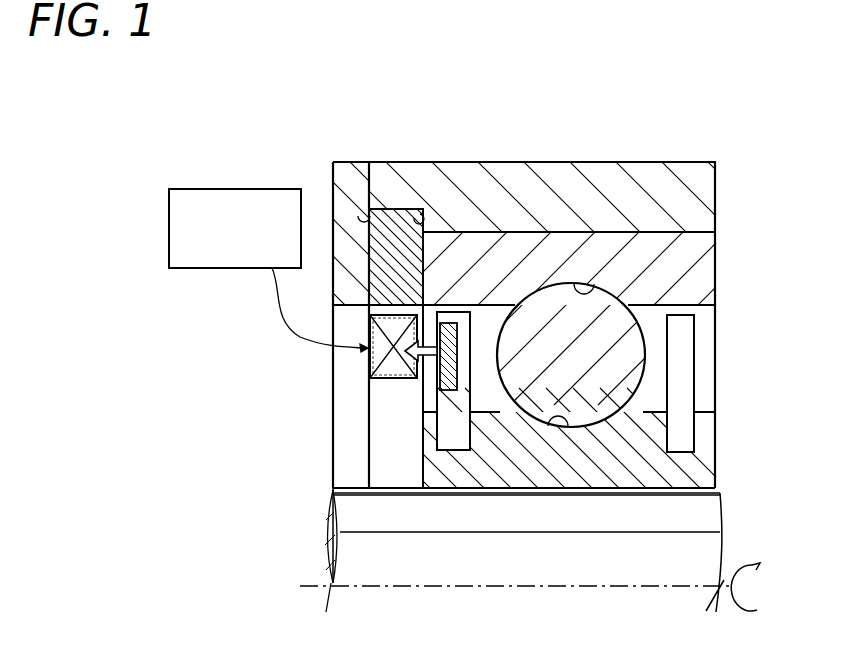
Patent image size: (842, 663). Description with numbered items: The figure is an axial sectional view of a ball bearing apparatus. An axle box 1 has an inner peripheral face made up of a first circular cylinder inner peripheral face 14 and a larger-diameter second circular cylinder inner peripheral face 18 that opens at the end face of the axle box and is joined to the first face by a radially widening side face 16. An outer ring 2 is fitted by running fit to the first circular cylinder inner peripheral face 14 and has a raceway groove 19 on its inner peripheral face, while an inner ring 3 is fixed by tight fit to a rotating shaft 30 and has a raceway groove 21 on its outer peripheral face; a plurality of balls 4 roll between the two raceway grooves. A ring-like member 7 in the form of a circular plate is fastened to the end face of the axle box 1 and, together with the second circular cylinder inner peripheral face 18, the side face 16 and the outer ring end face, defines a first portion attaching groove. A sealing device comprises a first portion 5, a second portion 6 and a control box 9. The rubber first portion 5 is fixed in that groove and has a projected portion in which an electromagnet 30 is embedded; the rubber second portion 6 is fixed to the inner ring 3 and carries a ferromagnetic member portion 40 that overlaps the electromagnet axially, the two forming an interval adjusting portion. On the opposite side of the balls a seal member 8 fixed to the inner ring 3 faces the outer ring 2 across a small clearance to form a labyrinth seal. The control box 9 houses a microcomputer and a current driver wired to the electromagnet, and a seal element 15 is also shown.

The axle box 1 is at (570, 182).
The outer ring 2 is at (667, 247).
The inner ring 3 is at (500, 465).
The balls 4 is at (593, 392).
The first portion 5 is at (398, 209).
The second portion 6 is at (447, 452).
The ring-like member 7 is at (338, 186).
The seal member 8 is at (695, 348).
The control box 9 is at (168, 220).
The first circular cylinder inner peripheral face 14 is at (529, 240).
The seal 15 is at (358, 214).
The side face 16 is at (414, 218).
The second circular cylinder inner peripheral face 18 is at (430, 238).
The raceway groove 19 is at (594, 288).
The raceway groove 21 is at (548, 426).
The electromagnet 30 is at (373, 355).
The ferromagnetic member portion 40 is at (438, 386).